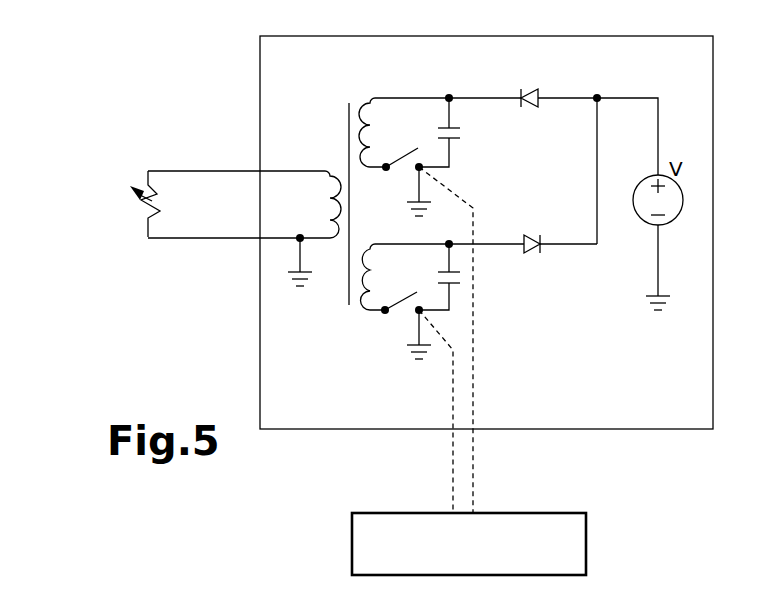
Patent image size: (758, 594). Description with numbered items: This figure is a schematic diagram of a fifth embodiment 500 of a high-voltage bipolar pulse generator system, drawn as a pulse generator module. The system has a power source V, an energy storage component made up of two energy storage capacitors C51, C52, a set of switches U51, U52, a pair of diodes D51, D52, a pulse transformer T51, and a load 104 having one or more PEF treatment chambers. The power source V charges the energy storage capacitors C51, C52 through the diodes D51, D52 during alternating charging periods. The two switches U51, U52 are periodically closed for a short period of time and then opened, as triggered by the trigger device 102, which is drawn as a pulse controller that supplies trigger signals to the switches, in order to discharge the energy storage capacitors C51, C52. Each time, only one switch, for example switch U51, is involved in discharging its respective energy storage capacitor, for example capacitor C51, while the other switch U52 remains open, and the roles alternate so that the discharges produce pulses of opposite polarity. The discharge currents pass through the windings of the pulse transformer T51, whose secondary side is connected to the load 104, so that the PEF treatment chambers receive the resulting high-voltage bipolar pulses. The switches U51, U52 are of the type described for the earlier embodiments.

The fifth embodiment of the high-voltage bipolar pulse generator system 500 is at (214, 50).
The load 104 is at (150, 219).
The trigger device 102 is at (586, 535).
The pulse transformer T51 is at (347, 318).
The switch U51 is at (426, 318).
The switch U52 is at (416, 390).
The energy storage capacitor C51 is at (464, 132).
The energy storage capacitor C52 is at (467, 277).
The diode D51 is at (523, 107).
The diode D52 is at (523, 255).